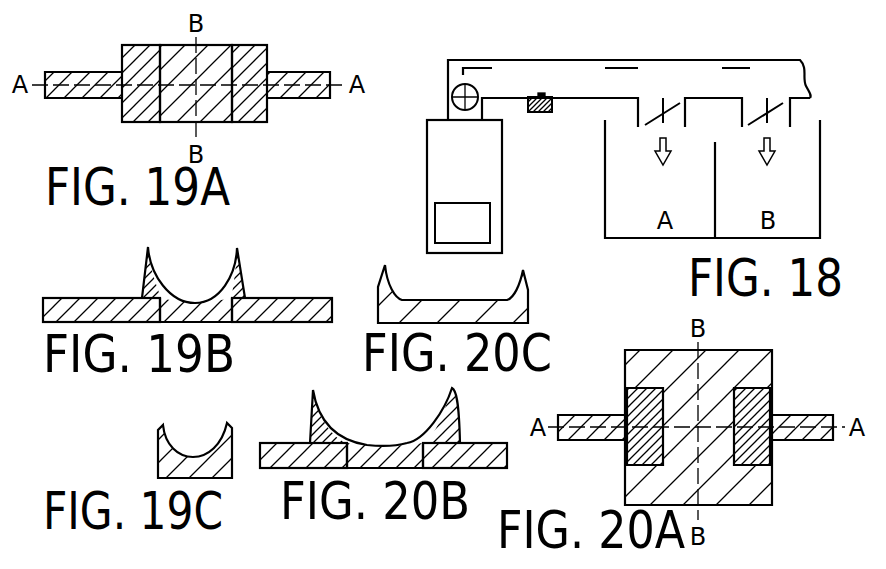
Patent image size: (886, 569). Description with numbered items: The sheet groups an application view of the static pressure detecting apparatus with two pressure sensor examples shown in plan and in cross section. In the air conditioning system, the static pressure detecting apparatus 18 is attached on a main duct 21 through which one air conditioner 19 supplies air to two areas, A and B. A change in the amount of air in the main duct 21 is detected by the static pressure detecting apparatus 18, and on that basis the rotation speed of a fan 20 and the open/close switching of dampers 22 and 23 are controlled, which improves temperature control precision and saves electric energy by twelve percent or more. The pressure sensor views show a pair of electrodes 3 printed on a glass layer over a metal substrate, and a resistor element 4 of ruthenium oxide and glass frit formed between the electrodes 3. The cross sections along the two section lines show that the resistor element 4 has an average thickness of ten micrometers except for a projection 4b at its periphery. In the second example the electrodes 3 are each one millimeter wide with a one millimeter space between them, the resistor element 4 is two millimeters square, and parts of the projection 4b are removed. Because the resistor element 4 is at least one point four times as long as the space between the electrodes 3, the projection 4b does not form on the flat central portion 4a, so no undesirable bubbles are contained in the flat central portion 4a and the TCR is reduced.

In FIG. 19A, the electrode 3 is at (142, 45).
In FIG. 19B, the electrode 3 is at (113, 298).
In FIG. 20B, the electrode 3 is at (288, 443).
In FIG. 20A, the electrode 3 is at (602, 415).
In FIG. 19A, the resistor element 4 is at (208, 45).
In FIG. 19B, the resistor element 4 is at (236, 250).
In FIG. 19C, the resistor element 4 is at (222, 424).
In FIG. 20A, the resistor element 4 is at (743, 350).
In FIG. 20C, the flat central portion 4a is at (522, 265).
In FIG. 20B, the flat central portion 4a is at (392, 443).
In FIG. 20B, the projection 4b is at (448, 389).
In FIG. 18, the static pressure detecting apparatus 18 is at (540, 112).
In FIG. 18, the air conditioner 19 is at (437, 173).
In FIG. 18, the fan 20 is at (454, 92).
In FIG. 18, the main duct 21 is at (629, 93).
In FIG. 18, the damper 22 is at (676, 102).
In FIG. 18, the damper 23 is at (776, 100).